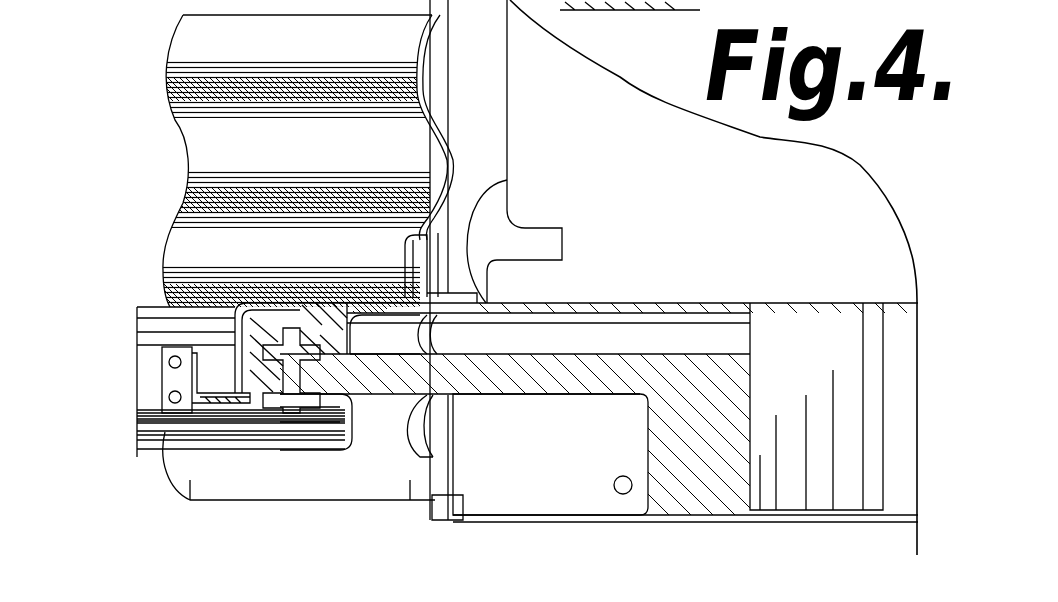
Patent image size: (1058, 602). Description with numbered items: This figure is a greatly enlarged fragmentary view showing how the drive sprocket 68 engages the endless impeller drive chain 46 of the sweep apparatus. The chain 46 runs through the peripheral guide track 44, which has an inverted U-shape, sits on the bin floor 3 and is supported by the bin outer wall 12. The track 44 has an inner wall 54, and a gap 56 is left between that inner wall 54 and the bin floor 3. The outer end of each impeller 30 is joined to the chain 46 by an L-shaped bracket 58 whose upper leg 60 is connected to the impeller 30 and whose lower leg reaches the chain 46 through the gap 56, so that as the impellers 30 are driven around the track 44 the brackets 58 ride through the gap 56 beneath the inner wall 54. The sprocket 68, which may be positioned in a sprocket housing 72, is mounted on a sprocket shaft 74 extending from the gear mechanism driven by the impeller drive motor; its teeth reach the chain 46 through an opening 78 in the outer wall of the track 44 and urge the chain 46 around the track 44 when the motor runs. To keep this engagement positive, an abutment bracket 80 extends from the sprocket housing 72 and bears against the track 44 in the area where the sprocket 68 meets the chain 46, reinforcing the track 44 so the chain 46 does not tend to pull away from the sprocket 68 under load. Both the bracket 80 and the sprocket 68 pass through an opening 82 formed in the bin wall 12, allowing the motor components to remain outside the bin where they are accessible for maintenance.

The bin floor 3 is at (138, 427).
The bin outer wall 12 is at (188, 37).
The impeller 30 is at (195, 378).
The peripheral guide track 44 is at (298, 305).
The impeller drive chain 46 is at (345, 440).
The inner wall 54 is at (240, 330).
The gap 56 is at (592, 0).
The L-shaped bracket 58 is at (140, 436).
The upper leg 60 is at (163, 351).
The sprocket 68 is at (553, 377).
The sprocket housing 72 is at (570, 497).
The sprocket shaft 74 is at (812, 478).
The gap or opening in the outer wall of the track 78 is at (362, 362).
The abutment bracket 80 is at (302, 338).
The opening in the bin wall 82 is at (427, 256).